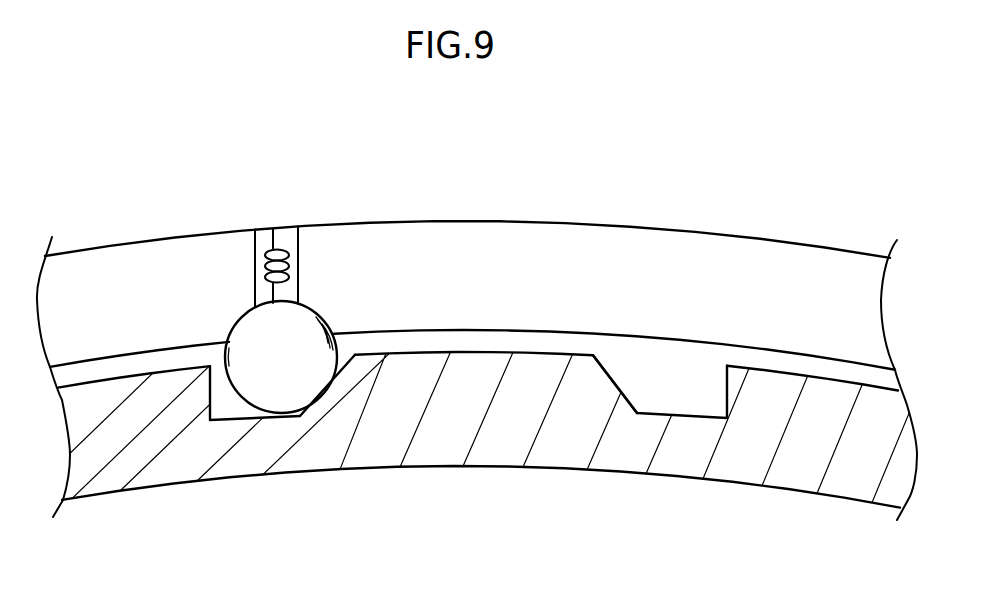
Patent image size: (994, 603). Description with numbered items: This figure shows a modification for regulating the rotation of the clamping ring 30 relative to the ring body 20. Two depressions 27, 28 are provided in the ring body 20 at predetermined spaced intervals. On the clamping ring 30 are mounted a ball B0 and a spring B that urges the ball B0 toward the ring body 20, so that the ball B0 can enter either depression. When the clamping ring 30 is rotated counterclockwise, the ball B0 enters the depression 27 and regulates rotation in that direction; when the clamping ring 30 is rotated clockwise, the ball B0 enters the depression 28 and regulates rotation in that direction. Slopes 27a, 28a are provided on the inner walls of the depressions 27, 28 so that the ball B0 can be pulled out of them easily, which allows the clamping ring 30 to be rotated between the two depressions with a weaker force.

The ring body 20 is at (807, 480).
The depression 27 is at (260, 397).
The slope 27a is at (297, 397).
The depression 28 is at (682, 403).
The slope 28a is at (637, 393).
The clamping ring 30 is at (602, 263).
The spring B is at (273, 240).
The ball B0 is at (308, 307).